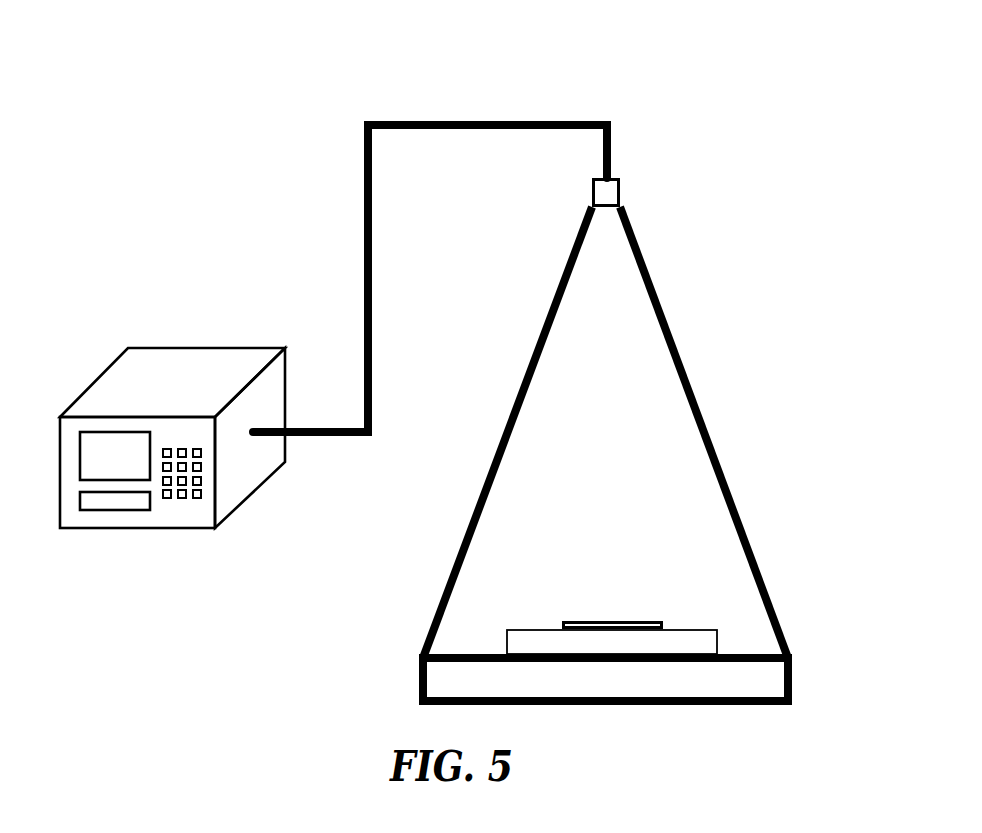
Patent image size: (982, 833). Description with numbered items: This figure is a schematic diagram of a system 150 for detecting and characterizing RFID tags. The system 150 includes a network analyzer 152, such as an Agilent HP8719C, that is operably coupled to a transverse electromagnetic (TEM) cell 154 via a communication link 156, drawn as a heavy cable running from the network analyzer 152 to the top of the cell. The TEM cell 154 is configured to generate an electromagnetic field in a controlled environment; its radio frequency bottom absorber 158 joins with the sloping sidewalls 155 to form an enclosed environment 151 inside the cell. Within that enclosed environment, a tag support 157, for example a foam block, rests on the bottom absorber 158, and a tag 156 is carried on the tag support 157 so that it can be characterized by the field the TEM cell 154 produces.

The system 150 is at (258, 117).
The enclosed environment 151 is at (585, 362).
The network analyzer 152 is at (202, 348).
The transverse electromagnetic (TEM) cell 154 is at (700, 277).
The sidewalls 155 is at (488, 468).
The communication link / tag 156 is at (505, 121).
The tag support 157 is at (717, 629).
The radio frequency bottom absorber 158 is at (792, 687).